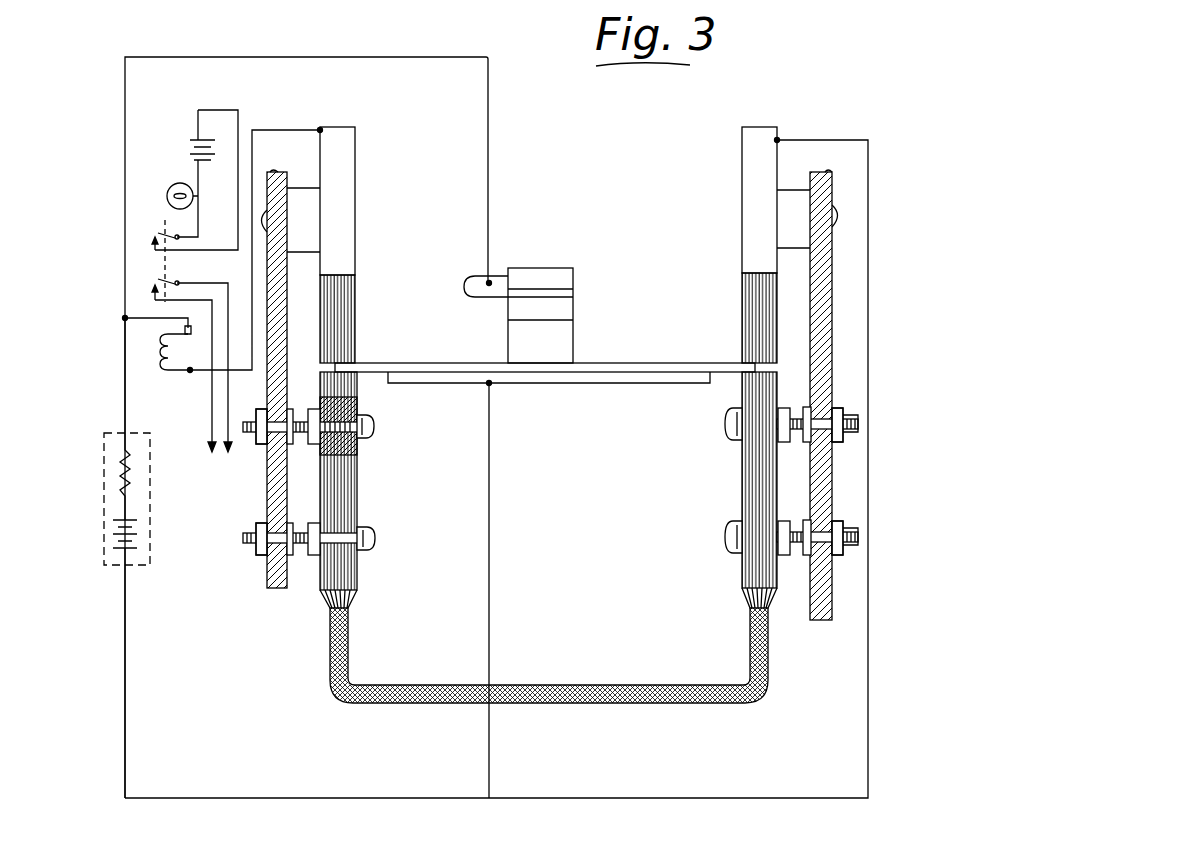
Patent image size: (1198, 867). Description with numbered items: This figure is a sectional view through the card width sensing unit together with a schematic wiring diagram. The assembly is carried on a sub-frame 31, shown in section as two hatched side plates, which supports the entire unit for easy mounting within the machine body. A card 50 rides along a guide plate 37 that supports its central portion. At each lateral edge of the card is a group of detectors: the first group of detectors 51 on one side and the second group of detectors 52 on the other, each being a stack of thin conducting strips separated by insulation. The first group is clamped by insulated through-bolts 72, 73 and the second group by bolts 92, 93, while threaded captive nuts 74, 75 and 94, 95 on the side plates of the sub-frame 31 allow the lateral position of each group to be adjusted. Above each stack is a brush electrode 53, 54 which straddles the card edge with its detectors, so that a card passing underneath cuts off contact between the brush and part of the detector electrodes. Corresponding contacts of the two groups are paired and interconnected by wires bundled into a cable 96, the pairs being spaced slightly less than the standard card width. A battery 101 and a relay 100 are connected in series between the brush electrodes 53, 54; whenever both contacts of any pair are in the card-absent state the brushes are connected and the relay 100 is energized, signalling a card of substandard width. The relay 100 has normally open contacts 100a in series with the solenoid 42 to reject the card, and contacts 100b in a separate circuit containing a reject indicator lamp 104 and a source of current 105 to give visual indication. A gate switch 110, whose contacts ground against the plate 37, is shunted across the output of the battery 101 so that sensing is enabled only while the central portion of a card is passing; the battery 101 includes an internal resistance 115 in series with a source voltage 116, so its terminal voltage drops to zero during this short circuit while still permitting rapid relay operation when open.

The sub-frame 31 is at (282, 302).
The guide plate 37 is at (573, 384).
The solenoid 42 is at (213, 458).
The card 50 is at (431, 363).
The first group of detectors 51 is at (357, 481).
The second group of detectors 52 is at (728, 477).
The brush electrode 53 is at (357, 320).
The brush electrode 54 is at (742, 322).
The through-bolt 72 is at (373, 432).
The through-bolt 73 is at (376, 540).
The captive nut 74 is at (265, 444).
The captive nut 75 is at (258, 557).
The bolt 92 is at (725, 425).
The bolt 93 is at (725, 540).
The captive nut 94 is at (836, 443).
The captive nut 95 is at (836, 556).
The cable 96 is at (382, 705).
The relay 100 is at (171, 373).
The normally open contacts 100a is at (156, 281).
The contacts 100b is at (156, 233).
The battery 101 is at (150, 526).
The reject indicator lamp 104 is at (167, 190).
The source of current 105 is at (187, 146).
The gate switch 110 is at (575, 310).
The internal resistance 115 is at (131, 478).
The source voltage 116 is at (140, 549).